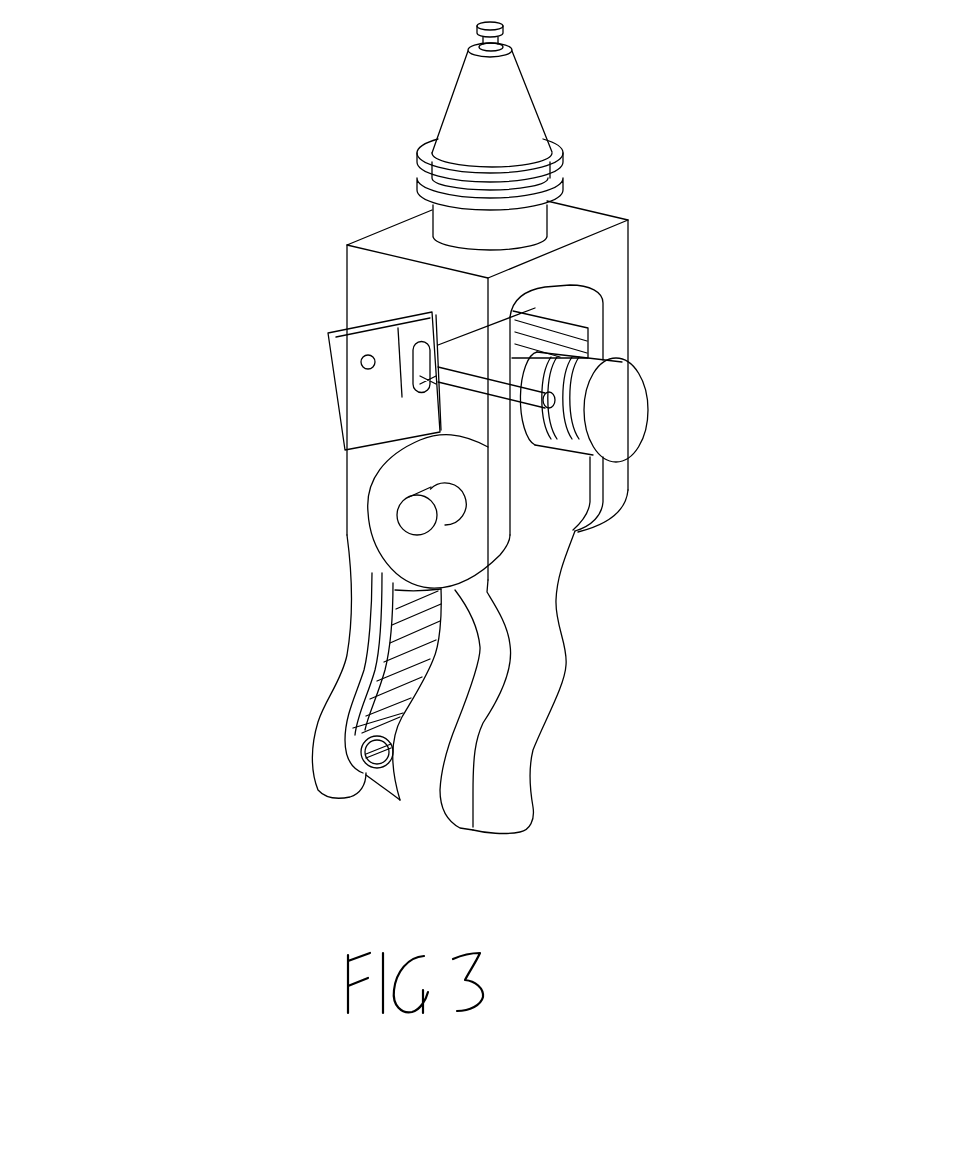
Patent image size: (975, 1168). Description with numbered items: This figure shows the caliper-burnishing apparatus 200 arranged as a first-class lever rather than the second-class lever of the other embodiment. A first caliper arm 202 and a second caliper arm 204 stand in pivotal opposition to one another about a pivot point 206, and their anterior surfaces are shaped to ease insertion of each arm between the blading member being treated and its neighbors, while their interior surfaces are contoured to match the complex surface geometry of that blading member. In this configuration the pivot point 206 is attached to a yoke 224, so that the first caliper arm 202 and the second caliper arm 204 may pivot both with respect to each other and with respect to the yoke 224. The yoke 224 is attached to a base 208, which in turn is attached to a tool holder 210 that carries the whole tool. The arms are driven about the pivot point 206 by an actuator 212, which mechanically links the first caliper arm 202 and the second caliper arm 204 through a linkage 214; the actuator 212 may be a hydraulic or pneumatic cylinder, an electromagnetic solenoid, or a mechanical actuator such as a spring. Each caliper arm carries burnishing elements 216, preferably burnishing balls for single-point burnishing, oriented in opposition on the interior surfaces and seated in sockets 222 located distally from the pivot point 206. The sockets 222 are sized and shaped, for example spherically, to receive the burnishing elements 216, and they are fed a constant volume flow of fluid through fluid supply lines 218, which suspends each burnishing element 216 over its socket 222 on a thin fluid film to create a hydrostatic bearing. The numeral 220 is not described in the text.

The apparatus 200 is at (212, 95).
The first caliper arm 202 is at (520, 720).
The second caliper arm 204 is at (333, 710).
The pivot point 206 is at (413, 513).
The base 208 is at (557, 203).
The tool holder 210 is at (532, 90).
The actuator 212 is at (613, 412).
The linkage 214 is at (440, 378).
The burnishing elements 216 is at (400, 800).
The fluid supply lines 218 is at (370, 635).
The aperture 220 is at (362, 362).
The sockets 222 is at (392, 752).
The yoke 224 is at (363, 263).